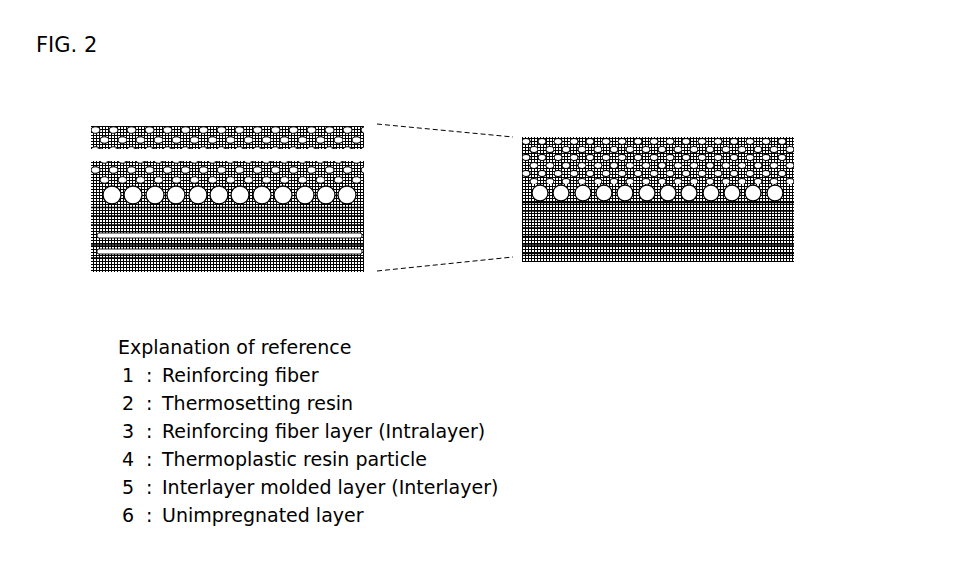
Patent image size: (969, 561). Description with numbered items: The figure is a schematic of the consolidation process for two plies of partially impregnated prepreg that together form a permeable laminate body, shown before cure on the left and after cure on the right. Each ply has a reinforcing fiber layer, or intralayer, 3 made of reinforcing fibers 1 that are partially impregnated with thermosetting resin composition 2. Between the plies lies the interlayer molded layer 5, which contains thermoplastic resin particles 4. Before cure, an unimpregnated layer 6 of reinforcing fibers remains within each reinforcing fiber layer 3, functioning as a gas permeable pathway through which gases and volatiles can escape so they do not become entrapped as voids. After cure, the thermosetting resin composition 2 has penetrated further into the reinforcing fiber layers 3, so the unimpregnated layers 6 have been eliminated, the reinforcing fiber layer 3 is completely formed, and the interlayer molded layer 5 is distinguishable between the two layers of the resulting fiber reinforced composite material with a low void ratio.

The reinforcing fibers 1 is at (90, 222).
The thermosetting resin composition 2 is at (90, 200).
The reinforcing fiber layer 3 is at (368, 271).
The thermoplastic resin particles 4 is at (182, 178).
The interlayer molded layer 5 is at (368, 187).
The unimpregnated layer 6 is at (88, 152).